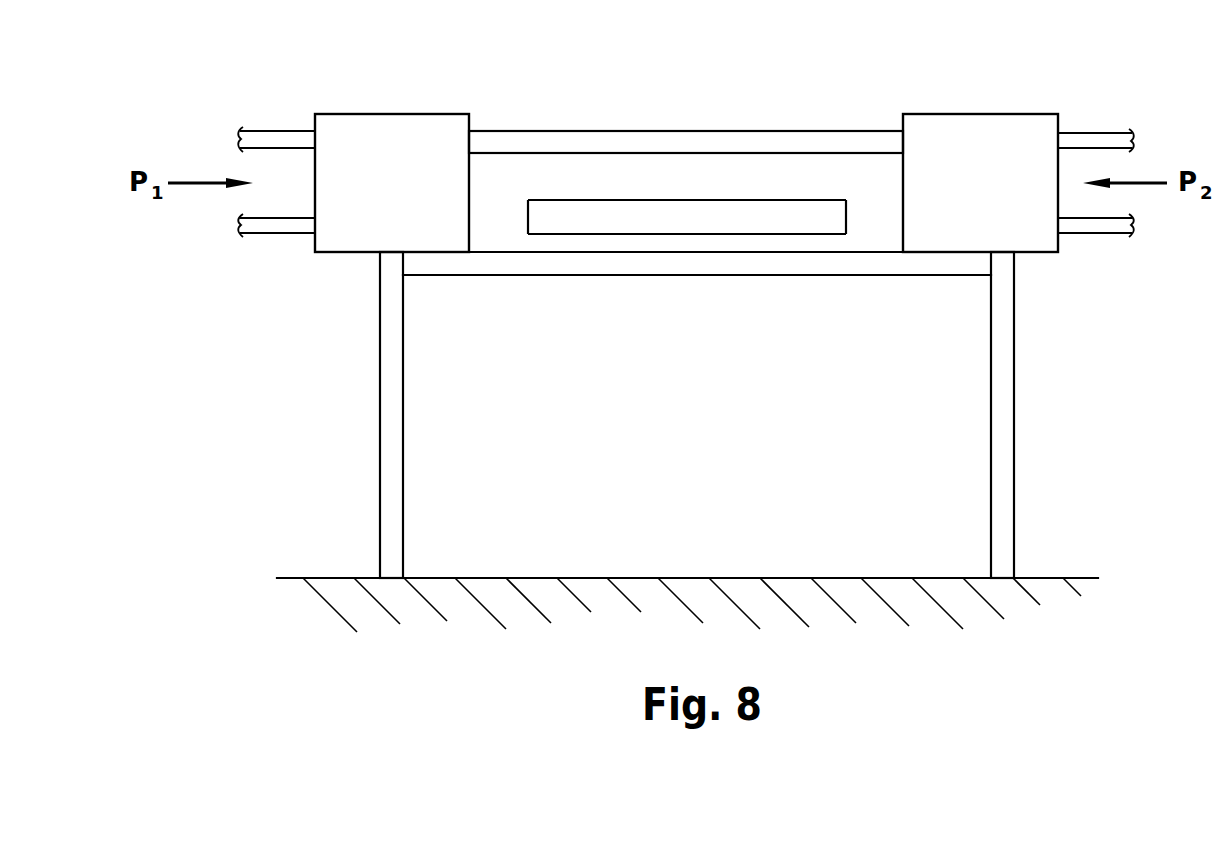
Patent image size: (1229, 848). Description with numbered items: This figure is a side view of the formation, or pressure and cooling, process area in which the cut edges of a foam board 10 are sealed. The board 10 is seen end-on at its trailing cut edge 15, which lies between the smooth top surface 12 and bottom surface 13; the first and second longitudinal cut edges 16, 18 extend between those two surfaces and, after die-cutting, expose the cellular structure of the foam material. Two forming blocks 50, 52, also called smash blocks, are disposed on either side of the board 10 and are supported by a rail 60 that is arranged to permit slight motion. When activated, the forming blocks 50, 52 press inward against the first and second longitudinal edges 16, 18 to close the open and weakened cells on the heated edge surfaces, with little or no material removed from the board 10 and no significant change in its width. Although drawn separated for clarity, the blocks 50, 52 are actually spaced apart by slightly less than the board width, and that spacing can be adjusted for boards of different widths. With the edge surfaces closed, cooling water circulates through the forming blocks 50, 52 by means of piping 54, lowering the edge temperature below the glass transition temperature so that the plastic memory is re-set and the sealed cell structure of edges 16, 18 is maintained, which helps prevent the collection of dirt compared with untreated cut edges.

The foam board 10 is at (642, 205).
The top surface 12 is at (567, 200).
The bottom surface 13 is at (590, 236).
The trailing cut edge 15 is at (742, 215).
The first longitudinal cut edge 16 is at (527, 215).
The second longitudinal cut edge 18 is at (846, 215).
The forming block 50 is at (391, 114).
The forming block 52 is at (979, 114).
The piping 54 is at (277, 131).
The rail 60 is at (589, 131).